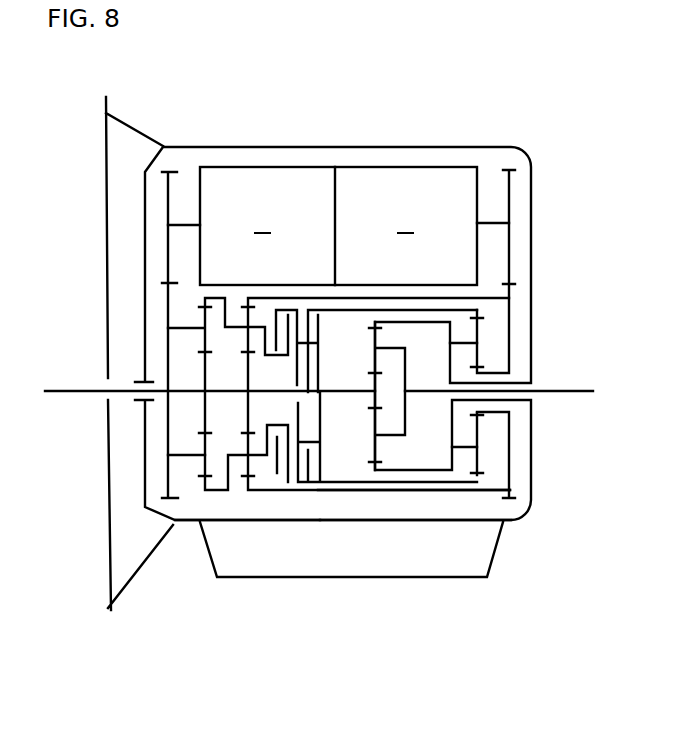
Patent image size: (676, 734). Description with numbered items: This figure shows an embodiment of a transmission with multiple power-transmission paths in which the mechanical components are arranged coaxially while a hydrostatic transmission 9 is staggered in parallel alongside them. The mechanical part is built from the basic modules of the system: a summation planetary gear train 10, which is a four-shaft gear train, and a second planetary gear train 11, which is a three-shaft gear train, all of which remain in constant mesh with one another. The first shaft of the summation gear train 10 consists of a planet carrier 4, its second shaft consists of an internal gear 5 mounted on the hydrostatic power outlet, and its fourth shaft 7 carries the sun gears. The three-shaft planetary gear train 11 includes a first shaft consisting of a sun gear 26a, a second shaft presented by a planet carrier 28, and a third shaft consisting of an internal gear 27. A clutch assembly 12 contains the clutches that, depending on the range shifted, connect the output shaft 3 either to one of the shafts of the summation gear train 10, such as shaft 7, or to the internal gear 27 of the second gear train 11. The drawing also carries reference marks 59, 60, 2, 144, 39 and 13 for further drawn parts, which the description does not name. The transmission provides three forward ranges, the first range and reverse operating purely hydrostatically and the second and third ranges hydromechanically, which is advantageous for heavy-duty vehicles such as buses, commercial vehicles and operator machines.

The hydrostatic transmission 9 is at (333, 146).
The internal gear 5 is at (338, 226).
The left bearing support 59 is at (168, 260).
The right bearing support 60 is at (510, 255).
The input shaft 2 is at (82, 390).
The output shaft 3 is at (562, 390).
The summation planetary gear train 10 is at (228, 495).
The planet carrier 4 is at (190, 458).
The fourth shaft 7 is at (277, 395).
The clutch 144 is at (285, 460).
The planet carrier 28 is at (462, 448).
The internal gear 27 is at (483, 475).
The sun gear 26a is at (483, 413).
The drum 39 is at (423, 493).
The clutch assembly 12 is at (303, 528).
The oil pan 13 is at (370, 530).
The second planetary gear train 11 is at (472, 522).